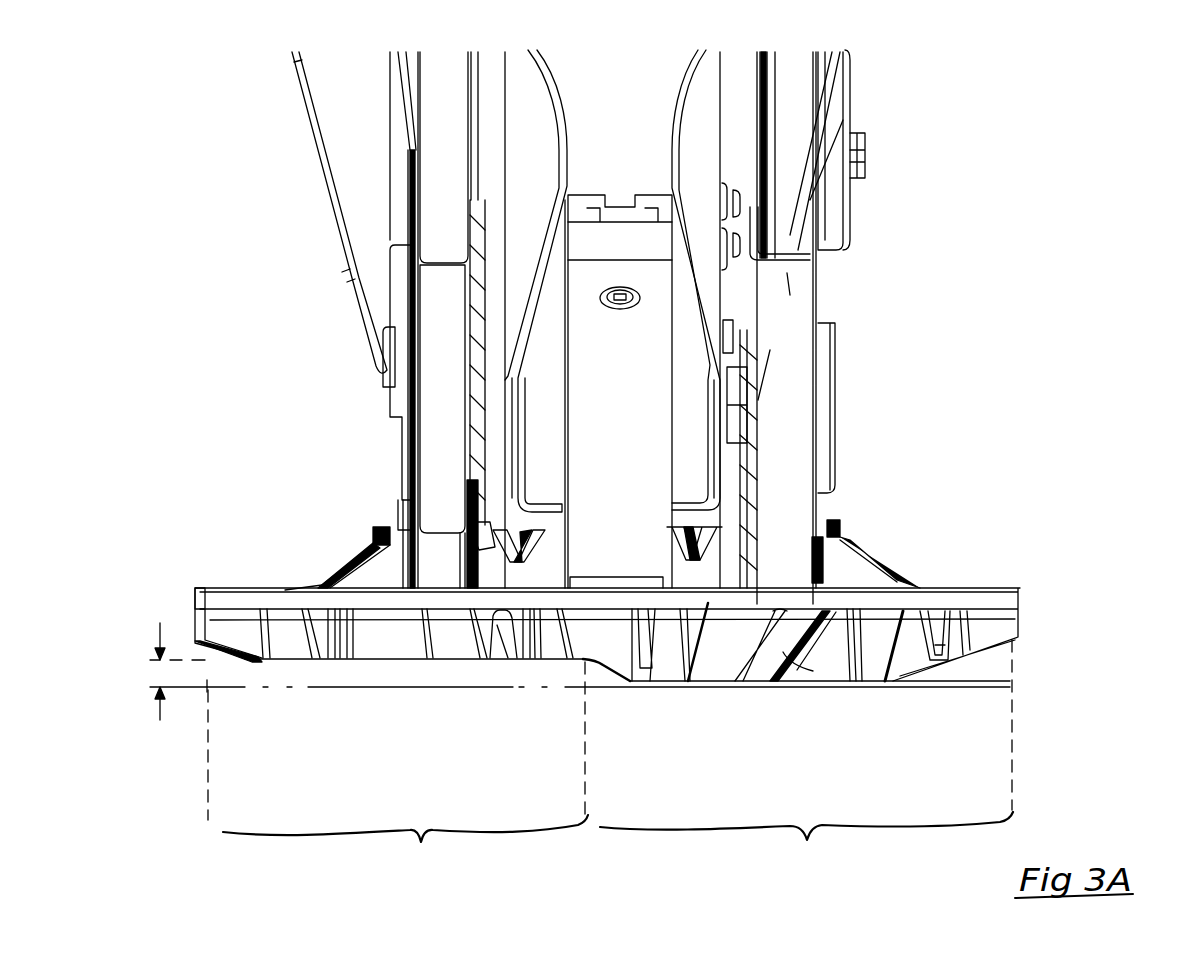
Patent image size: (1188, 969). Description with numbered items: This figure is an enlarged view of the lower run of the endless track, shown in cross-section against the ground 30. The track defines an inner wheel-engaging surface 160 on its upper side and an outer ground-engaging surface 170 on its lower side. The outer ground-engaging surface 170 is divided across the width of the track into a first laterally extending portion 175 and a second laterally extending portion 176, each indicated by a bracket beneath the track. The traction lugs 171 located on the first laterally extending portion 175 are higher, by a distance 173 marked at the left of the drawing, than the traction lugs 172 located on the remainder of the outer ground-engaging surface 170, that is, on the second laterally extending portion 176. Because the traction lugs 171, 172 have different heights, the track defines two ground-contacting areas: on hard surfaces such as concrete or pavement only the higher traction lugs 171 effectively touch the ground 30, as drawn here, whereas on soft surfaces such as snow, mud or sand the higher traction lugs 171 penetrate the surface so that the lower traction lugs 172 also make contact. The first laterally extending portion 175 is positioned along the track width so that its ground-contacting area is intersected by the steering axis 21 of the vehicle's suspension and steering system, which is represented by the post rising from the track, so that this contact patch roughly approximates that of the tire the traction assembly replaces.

The steering axis 21 is at (777, 333).
The ground 30 is at (1055, 682).
The inner wheel-engaging surface 160 is at (958, 538).
The outer ground-engaging surface 170 is at (1030, 757).
The traction lugs 171 is at (715, 672).
The traction lugs 172 is at (372, 650).
The distance 173 is at (175, 691).
The first laterally extending portion 175 is at (805, 853).
The second laterally extending portion 176 is at (412, 860).